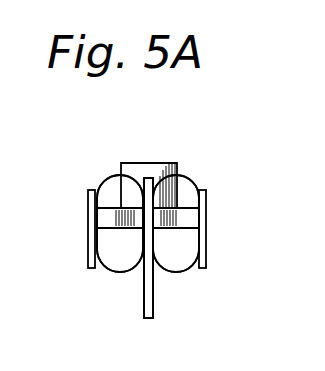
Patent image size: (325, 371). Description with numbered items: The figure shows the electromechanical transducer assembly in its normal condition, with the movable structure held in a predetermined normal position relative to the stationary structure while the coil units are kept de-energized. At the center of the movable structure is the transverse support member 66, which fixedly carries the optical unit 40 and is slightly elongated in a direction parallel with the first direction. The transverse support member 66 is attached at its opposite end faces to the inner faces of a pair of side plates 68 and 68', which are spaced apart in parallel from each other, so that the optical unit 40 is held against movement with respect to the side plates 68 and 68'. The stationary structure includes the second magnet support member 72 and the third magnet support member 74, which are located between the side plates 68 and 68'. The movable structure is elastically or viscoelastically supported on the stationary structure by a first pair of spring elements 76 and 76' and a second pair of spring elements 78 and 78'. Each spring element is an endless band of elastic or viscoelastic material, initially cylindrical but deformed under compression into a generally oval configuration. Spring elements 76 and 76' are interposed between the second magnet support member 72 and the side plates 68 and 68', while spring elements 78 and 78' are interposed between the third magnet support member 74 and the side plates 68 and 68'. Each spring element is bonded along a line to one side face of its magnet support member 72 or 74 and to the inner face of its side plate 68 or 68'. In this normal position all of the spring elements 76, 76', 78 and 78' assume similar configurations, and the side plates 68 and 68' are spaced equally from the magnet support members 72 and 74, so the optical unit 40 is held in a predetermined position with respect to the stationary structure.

The optical unit 40 is at (153, 162).
The transverse support member 66 is at (123, 229).
The side plate 68 is at (67, 233).
The side plate 68' is at (229, 232).
The second magnet support member 72 is at (154, 300).
The third magnet support member 74 is at (154, 300).
The spring element 76 is at (95, 207).
The spring element 78 is at (95, 207).
The spring element 76' is at (215, 205).
The spring element 78' is at (215, 205).